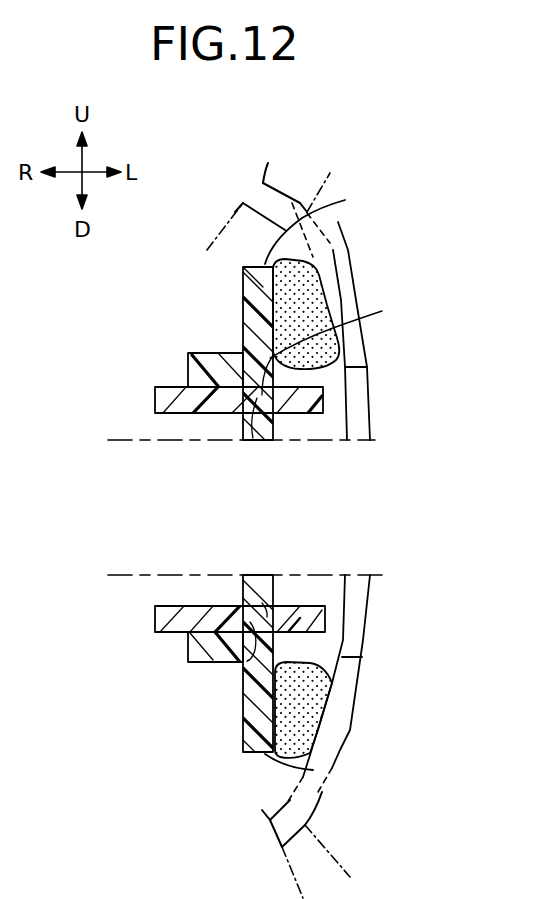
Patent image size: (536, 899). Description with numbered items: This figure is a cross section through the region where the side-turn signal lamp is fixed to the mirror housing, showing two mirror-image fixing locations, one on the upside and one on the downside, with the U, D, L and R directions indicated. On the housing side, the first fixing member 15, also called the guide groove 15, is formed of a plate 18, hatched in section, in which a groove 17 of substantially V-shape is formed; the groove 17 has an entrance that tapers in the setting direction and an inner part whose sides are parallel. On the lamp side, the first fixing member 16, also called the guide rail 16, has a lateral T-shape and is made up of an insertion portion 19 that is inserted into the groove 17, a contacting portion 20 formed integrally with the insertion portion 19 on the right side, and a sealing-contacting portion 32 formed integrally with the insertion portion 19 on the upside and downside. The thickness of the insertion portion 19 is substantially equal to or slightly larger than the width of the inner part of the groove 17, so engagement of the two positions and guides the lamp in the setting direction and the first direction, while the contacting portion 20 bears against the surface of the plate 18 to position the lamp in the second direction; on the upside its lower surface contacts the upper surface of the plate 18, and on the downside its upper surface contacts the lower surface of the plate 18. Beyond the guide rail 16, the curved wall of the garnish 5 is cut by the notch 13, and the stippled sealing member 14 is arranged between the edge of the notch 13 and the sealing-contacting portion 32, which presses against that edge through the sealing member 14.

The garnish 5 is at (330, 173).
The notch 13 is at (352, 368).
The sealing member 14 is at (313, 292).
The first fixing member (guide groove) 15 is at (318, 422).
The first fixing member (guide rail) 16 is at (236, 289).
The groove 17 is at (258, 418).
The plate 18 is at (177, 410).
The insertion portion 19 is at (216, 697).
The contacting portion 20 is at (197, 350).
The sealing-contacting portion 32 is at (345, 200).